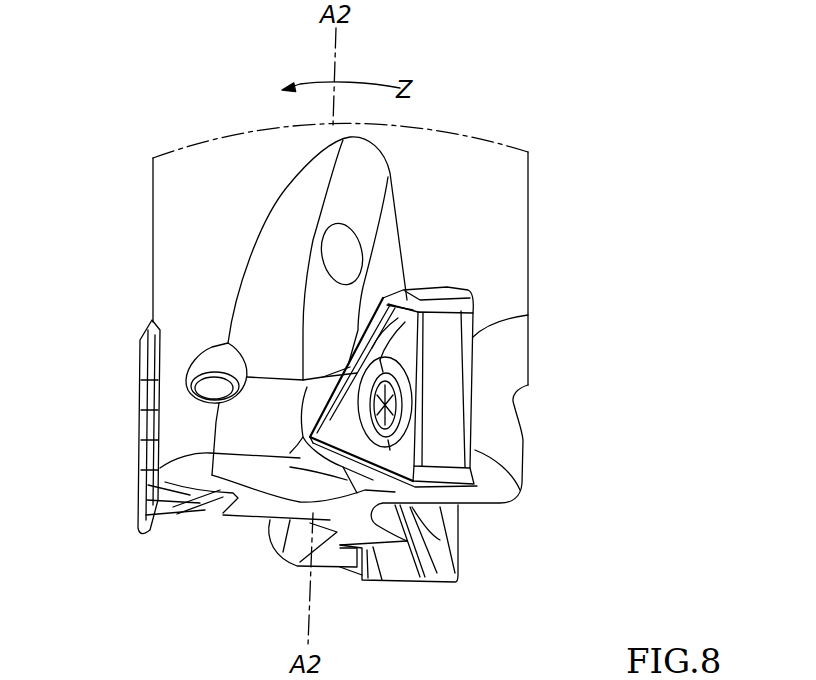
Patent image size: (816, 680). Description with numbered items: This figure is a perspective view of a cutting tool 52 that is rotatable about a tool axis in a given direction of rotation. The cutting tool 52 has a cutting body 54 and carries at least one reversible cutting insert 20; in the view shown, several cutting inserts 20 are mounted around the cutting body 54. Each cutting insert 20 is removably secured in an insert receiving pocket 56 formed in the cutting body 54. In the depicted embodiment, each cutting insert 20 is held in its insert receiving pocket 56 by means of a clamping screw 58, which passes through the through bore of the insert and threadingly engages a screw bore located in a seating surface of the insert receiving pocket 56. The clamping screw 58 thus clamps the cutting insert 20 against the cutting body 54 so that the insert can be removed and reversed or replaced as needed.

The reversible cutting insert 20 is at (450, 436).
The cutting tool 52 is at (487, 127).
The cutting body 54 is at (460, 240).
The insert receiving pocket 56 is at (456, 288).
The clamping screw 58 is at (393, 394).